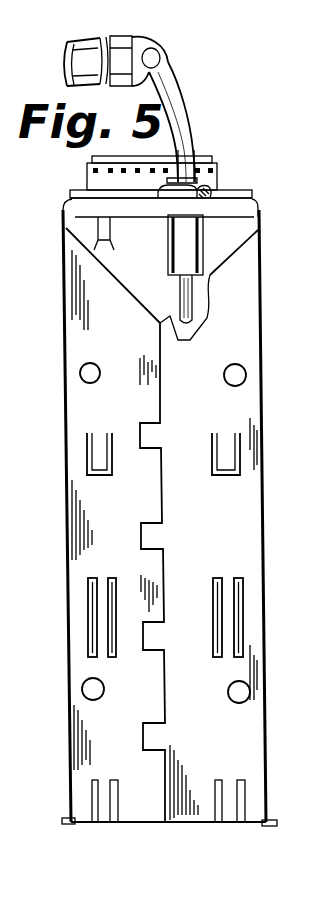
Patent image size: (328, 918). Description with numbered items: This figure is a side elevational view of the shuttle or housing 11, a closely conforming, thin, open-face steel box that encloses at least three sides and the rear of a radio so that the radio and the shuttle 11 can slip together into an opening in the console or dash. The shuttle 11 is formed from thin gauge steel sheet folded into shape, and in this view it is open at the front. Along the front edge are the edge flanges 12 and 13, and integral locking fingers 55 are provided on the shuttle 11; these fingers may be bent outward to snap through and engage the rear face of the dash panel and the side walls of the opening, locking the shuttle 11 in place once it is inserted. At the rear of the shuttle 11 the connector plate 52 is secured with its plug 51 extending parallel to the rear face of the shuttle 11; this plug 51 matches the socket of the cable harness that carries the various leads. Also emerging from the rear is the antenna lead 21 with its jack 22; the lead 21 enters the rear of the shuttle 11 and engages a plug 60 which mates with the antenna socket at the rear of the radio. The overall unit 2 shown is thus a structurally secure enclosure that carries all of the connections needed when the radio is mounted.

The hydraulic unit 2 is at (0, 746).
The shuttle or housing 11 is at (232, 285).
The edge flange 12 is at (66, 818).
The edge flange 13 is at (276, 822).
The antenna lead 21 is at (183, 100).
The jack 22 is at (158, 43).
The plug 51 is at (105, 182).
The connector plate 52 is at (75, 194).
The locking fingers 55 is at (100, 808).
The plug 60 is at (183, 250).